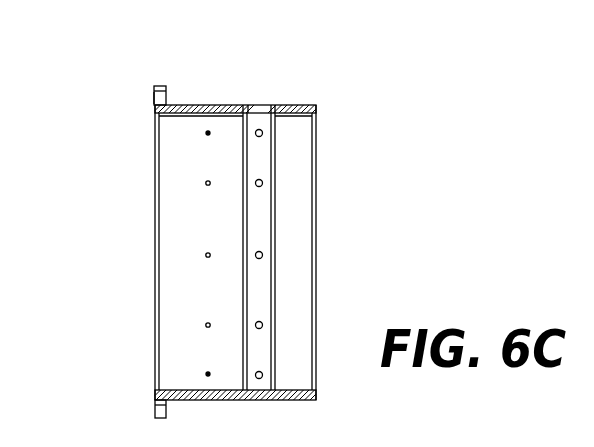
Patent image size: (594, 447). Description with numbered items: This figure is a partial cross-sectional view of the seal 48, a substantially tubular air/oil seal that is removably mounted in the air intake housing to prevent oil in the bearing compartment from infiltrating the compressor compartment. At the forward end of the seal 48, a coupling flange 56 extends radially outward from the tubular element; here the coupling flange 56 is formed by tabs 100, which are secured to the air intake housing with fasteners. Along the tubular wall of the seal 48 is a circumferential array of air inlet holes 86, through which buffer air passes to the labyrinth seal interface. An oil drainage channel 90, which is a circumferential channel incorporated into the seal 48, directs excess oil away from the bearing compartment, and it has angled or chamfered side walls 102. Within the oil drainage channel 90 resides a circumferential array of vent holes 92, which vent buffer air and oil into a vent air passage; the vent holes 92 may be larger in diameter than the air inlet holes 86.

The seal 48 is at (305, 80).
The coupling flange 56 is at (150, 97).
The air inlet holes 86 is at (209, 105).
The oil drainage channel 90 is at (258, 295).
The vent holes 92 is at (258, 105).
The tabs 100 is at (158, 86).
The side walls 102 is at (263, 132).